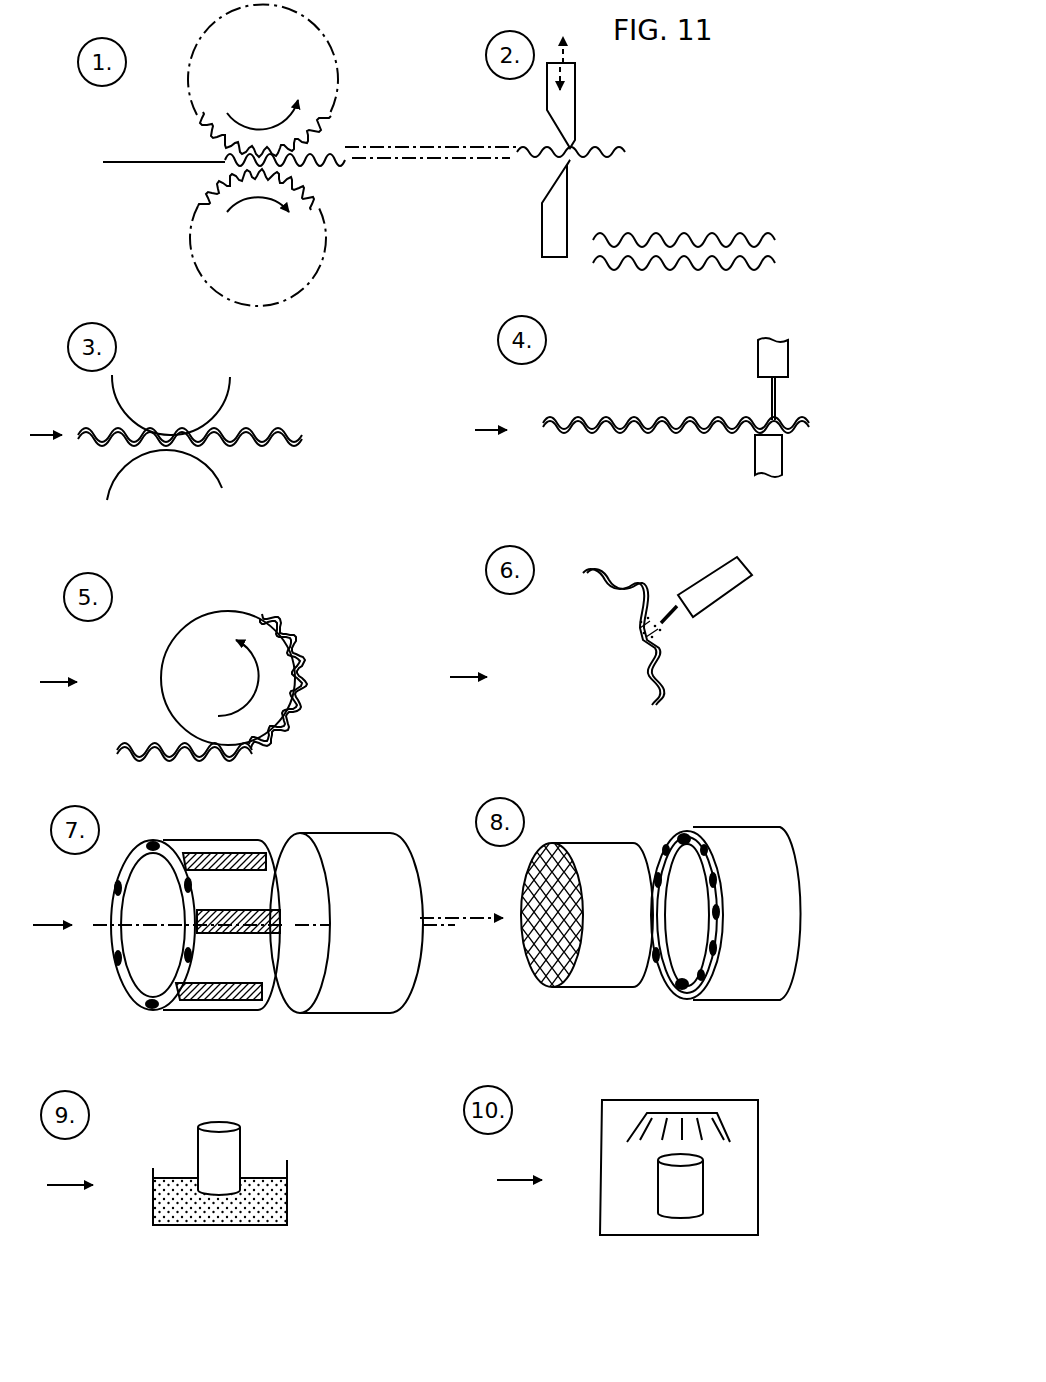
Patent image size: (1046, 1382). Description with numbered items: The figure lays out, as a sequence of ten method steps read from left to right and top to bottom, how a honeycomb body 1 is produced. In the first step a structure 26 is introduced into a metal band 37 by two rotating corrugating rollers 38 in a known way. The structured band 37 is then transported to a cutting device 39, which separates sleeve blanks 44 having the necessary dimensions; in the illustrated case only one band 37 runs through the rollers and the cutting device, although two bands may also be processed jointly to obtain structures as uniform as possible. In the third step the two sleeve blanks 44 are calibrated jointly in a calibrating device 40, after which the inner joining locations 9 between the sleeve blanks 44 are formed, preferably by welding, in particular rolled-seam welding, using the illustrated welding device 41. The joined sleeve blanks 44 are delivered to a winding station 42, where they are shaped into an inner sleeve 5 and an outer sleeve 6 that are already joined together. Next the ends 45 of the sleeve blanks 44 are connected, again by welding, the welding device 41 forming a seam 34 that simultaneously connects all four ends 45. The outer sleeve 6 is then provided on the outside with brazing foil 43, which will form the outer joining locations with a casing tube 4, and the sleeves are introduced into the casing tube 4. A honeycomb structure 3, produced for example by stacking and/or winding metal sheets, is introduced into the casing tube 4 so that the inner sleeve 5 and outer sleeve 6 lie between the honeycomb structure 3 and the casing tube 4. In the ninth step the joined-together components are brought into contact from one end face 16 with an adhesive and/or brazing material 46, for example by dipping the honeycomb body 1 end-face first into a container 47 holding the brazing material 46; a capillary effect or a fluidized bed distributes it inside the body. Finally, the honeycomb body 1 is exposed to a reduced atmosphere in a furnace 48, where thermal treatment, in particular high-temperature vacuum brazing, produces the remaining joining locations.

The honeycomb body 1 is at (230, 1155).
The honeycomb structure 3 is at (610, 968).
The casing tube 4 is at (358, 1000).
The inner sleeve 5 is at (140, 972).
The outer sleeve 6 is at (210, 973).
The inner joining location 9 is at (597, 434).
The end face 16 is at (220, 1197).
The structure 26 is at (525, 160).
The seam 34 is at (633, 648).
The metal band 37 is at (138, 162).
The corrugating roller 38 is at (312, 134).
The cutting device 39 is at (567, 116).
The calibrating device 40 is at (228, 384).
The welding device 41 is at (777, 360).
The winding station 42 is at (190, 654).
The brazing foil 43 is at (230, 993).
The sleeve blank 44 is at (780, 234).
The end 45 is at (545, 422).
The brazing material 46 is at (278, 1205).
The container 47 is at (157, 1213).
The furnace 48 is at (760, 1128).